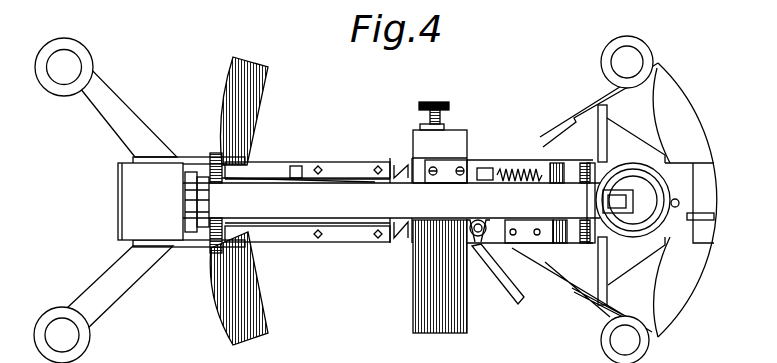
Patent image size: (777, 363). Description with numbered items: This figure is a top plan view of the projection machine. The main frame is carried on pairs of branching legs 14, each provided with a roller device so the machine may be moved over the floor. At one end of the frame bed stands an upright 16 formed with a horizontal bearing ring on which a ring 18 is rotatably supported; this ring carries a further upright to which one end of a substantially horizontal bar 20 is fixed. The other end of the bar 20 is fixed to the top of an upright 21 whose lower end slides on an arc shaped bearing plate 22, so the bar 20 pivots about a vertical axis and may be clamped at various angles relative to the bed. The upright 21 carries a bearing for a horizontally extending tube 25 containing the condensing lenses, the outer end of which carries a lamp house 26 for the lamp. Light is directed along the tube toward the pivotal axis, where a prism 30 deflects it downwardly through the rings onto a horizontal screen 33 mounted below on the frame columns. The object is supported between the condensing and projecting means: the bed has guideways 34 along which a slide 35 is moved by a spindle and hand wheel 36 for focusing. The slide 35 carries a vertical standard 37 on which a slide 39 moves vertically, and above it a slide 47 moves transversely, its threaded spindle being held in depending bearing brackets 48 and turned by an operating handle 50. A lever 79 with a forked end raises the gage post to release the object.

The branching legs 14 is at (133, 132).
The upright 16 is at (570, 237).
The ring 18 is at (715, 166).
The bar 20 is at (391, 201).
The upright 21 is at (211, 166).
The arc shaped bearing plate 22 is at (249, 104).
The tube 25 is at (263, 178).
The lamp house 26 is at (125, 213).
The prism 30 is at (629, 214).
The screen 33 is at (702, 123).
The guideways 34 is at (306, 236).
The slide 35 is at (343, 165).
The hand wheel 36 is at (511, 160).
The vertical standard 37 is at (391, 166).
The slide 39 is at (411, 158).
The slide 47 is at (468, 138).
The bearing brackets 48 is at (446, 126).
The operating handle 50 is at (444, 101).
The lever 79 is at (501, 289).